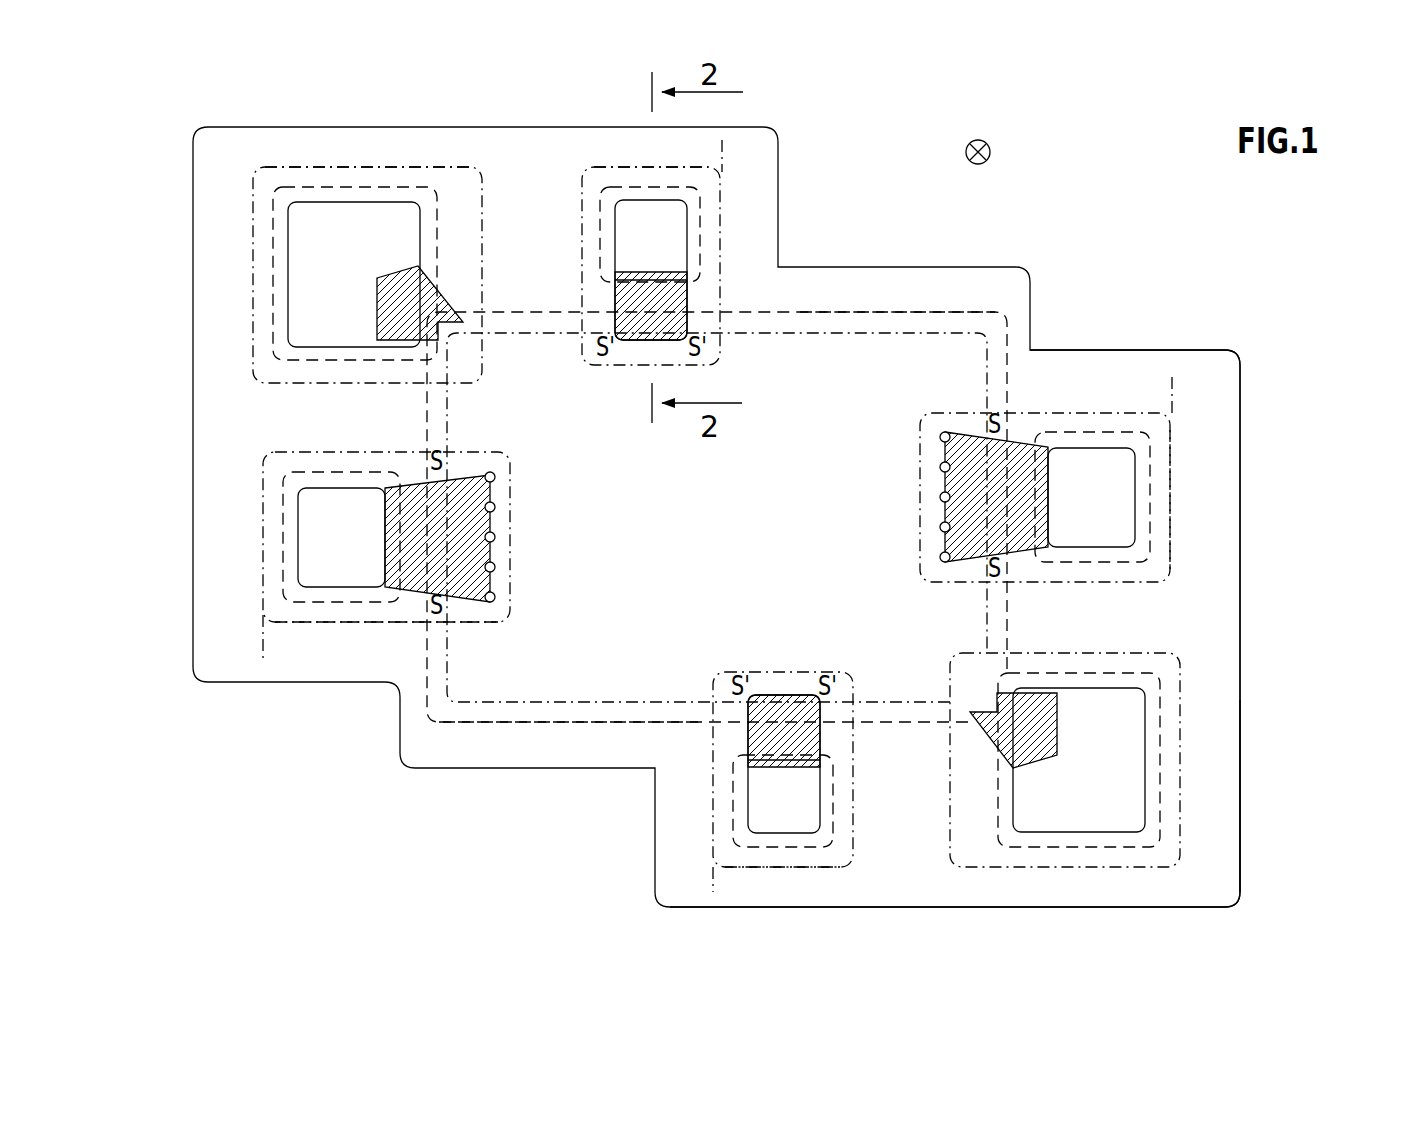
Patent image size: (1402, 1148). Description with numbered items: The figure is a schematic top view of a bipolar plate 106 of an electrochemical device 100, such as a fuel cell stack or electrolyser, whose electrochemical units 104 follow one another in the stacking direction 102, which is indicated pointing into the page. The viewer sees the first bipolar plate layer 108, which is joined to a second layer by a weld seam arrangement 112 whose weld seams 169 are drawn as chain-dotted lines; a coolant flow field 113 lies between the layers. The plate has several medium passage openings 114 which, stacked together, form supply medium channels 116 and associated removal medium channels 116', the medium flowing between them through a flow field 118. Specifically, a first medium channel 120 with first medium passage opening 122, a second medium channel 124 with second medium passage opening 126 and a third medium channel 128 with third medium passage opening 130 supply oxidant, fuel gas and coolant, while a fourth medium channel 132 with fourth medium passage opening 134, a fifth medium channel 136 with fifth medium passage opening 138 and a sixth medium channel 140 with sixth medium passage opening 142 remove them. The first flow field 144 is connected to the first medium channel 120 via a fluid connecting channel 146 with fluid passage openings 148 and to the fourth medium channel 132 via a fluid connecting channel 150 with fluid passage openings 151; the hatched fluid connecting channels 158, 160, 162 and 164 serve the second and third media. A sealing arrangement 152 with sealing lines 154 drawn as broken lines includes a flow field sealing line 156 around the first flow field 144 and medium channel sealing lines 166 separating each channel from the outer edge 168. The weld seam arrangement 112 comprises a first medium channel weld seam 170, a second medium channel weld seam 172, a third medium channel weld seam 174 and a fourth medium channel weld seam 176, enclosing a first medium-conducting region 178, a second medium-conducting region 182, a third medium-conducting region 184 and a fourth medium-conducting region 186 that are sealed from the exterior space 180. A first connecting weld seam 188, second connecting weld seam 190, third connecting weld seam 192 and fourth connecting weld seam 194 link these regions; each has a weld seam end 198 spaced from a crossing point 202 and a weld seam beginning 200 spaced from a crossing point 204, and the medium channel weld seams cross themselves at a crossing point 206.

The electrochemical device 100 is at (1256, 438).
The stacking direction 102 is at (991, 152).
The electrochemical unit 104 is at (1258, 515).
The bipolar plate 106 is at (1160, 345).
The first bipolar plate layer 108 is at (1215, 800).
The weld seam arrangement 112 is at (250, 196).
The coolant flow field 113 is at (785, 523).
The medium passage opening 114 is at (300, 205).
The medium channel 116 is at (522, 321).
The removal medium channel 116' is at (948, 754).
The flow field 118 is at (785, 574).
The first medium channel 120 is at (366, 536).
The first medium passage opening 122 is at (366, 576).
The second medium channel 124 is at (672, 232).
The second medium passage opening 126 is at (672, 268).
The third medium channel 128 is at (358, 253).
The third medium passage opening 130 is at (358, 294).
The fourth medium channel 132 is at (1110, 494).
The fourth medium passage opening 134 is at (1110, 534).
The fifth medium channel 136 is at (804, 793).
The fifth medium passage opening 138 is at (804, 829).
The sixth medium channel 140 is at (1108, 765).
The sixth medium passage opening 142 is at (1108, 804).
The first flow field 144 is at (785, 471).
The fluid connecting channel 146 is at (493, 560).
The fluid passage openings 148 is at (494, 537).
The fluid connecting channel 150 is at (980, 530).
The fluid passage openings 151 is at (941, 497).
The sealing arrangement 152 is at (915, 302).
The sealing lines 154 is at (960, 310).
The flow field sealing line 156 is at (1007, 335).
The fluid connecting channel 158 is at (655, 315).
The fluid connecting channel 160 is at (782, 712).
The fluid connecting channel 162 is at (456, 318).
The fluid connecting channel 164 is at (972, 713).
The medium channel sealing line 166 is at (333, 187).
The outer edge 168 is at (1241, 758).
The weld seams 169 is at (255, 262).
The first medium channel weld seam 170 is at (368, 625).
The second medium channel weld seam 172 is at (620, 165).
The third medium channel weld seam 174 is at (1175, 560).
The fourth medium channel weld seam 176 is at (838, 872).
The first medium-conducting region 178 is at (357, 167).
The exterior space 180 is at (148, 406).
The second medium-conducting region 182 is at (662, 165).
The third medium-conducting region 184 is at (1142, 586).
The fourth medium-conducting region 186 is at (738, 870).
The first connecting weld seam 188 is at (490, 205).
The second connecting weld seam 190 is at (492, 722).
The third connecting weld seam 192 is at (1050, 868).
The fourth connecting weld seam 194 is at (990, 333).
The weld seam end 198 is at (987, 425).
The weld seam beginning 200 is at (597, 327).
The crossing point 202 is at (1010, 400).
The crossing point 204 is at (582, 325).
The crossing point 206 is at (728, 158).